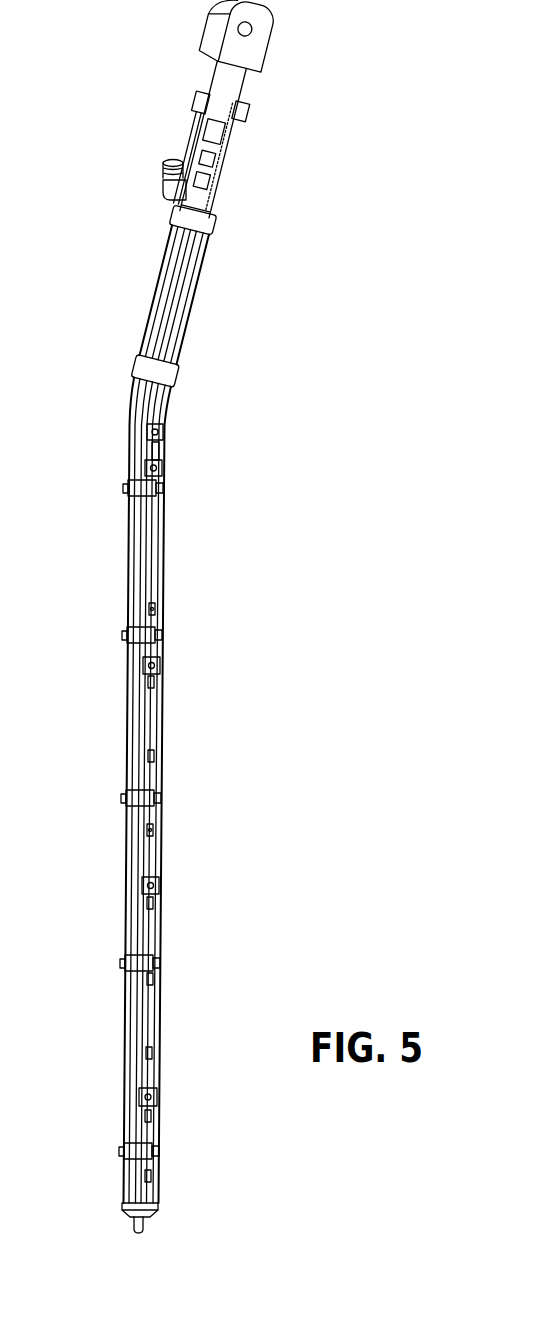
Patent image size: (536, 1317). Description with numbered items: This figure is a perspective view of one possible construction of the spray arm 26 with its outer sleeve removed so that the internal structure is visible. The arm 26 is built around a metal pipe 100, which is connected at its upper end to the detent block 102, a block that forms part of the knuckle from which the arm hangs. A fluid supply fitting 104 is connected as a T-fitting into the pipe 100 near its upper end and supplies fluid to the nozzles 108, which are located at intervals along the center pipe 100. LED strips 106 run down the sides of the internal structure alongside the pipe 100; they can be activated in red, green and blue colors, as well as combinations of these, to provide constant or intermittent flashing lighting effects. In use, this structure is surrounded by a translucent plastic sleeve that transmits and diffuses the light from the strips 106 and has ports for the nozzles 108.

The spray arm 26 is at (215, 386).
The metal pipe 100 is at (243, 83).
The detent block 102 is at (215, 38).
The fluid supply fitting 104 is at (161, 168).
The LED strips 106 is at (130, 522).
The nozzles 108 is at (158, 610).